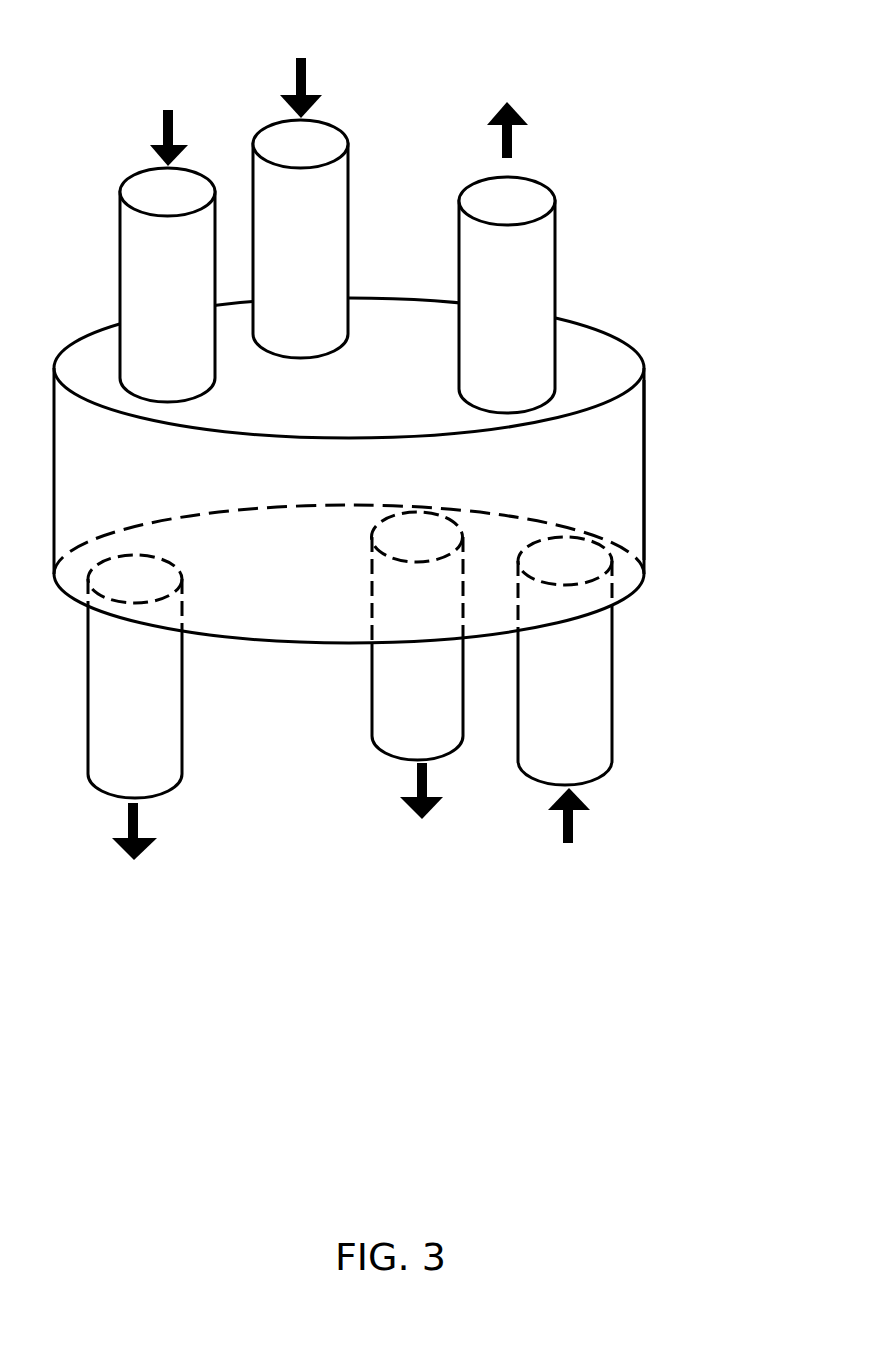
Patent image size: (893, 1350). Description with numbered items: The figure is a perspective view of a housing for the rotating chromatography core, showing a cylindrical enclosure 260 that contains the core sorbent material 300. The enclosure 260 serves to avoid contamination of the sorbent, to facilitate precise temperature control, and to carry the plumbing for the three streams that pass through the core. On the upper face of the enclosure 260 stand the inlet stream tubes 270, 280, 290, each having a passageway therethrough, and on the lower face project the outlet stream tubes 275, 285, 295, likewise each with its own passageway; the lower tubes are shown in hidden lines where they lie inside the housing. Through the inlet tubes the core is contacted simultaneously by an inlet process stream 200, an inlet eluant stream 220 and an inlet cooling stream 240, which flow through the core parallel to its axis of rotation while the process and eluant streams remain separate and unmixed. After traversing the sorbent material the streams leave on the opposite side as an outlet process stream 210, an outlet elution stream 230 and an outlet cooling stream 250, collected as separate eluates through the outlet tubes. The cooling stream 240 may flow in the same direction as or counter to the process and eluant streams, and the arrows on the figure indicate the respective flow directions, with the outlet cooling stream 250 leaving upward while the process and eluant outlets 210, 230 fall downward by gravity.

The inlet process stream 200 is at (174, 127).
The outlet process stream 210 is at (138, 820).
The inlet eluant stream 220 is at (307, 82).
The outlet elution stream 230 is at (428, 782).
The inlet cooling stream 240 is at (575, 828).
The outlet cooling stream 250 is at (512, 143).
The enclosure 260 is at (644, 513).
The inlet stream tube 270 is at (196, 294).
The outlet stream tube 275 is at (160, 730).
The inlet stream tube 280 is at (328, 252).
The outlet stream tube 285 is at (443, 712).
The inlet stream tube 290 is at (598, 733).
The outlet stream tube 295 is at (540, 304).
The core sorbent material 300 is at (613, 433).